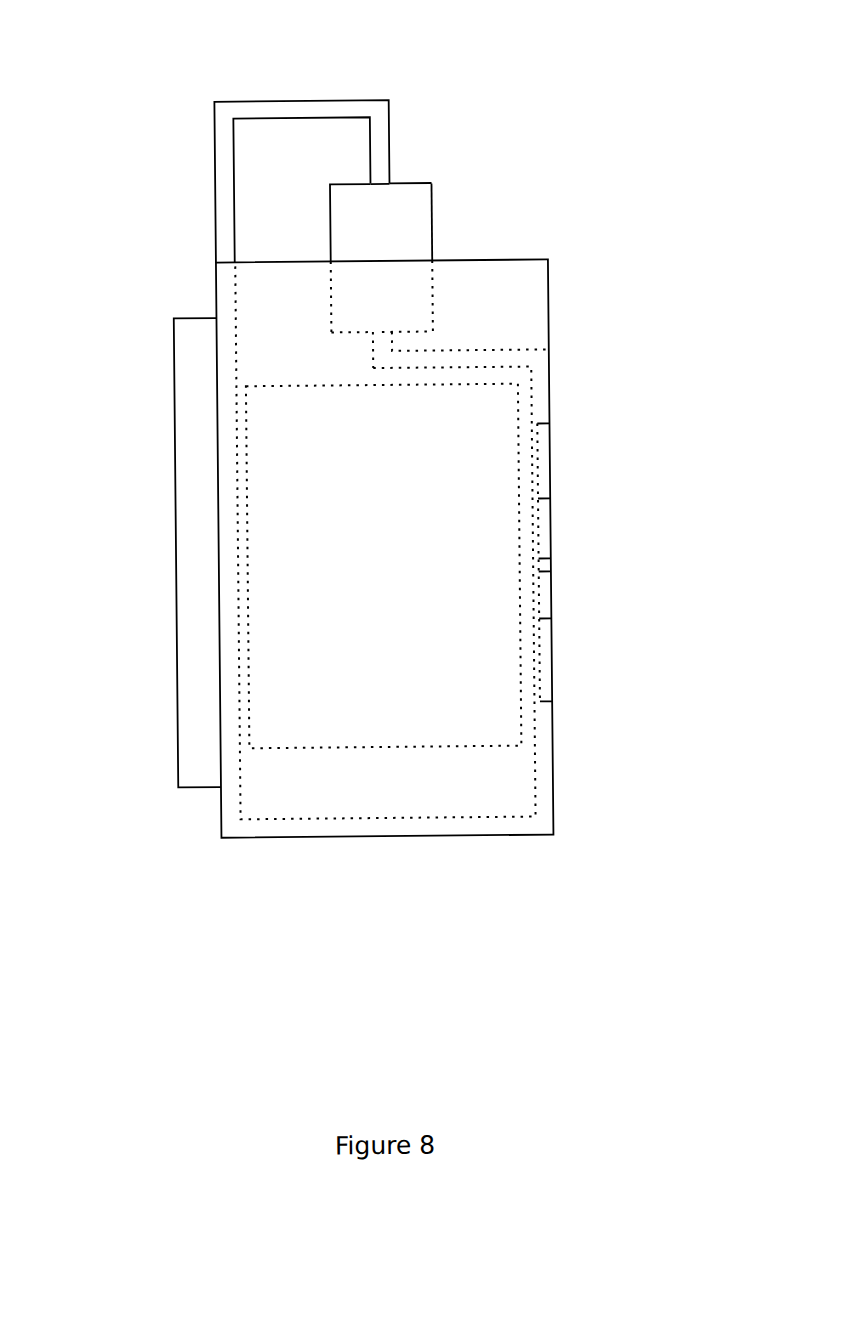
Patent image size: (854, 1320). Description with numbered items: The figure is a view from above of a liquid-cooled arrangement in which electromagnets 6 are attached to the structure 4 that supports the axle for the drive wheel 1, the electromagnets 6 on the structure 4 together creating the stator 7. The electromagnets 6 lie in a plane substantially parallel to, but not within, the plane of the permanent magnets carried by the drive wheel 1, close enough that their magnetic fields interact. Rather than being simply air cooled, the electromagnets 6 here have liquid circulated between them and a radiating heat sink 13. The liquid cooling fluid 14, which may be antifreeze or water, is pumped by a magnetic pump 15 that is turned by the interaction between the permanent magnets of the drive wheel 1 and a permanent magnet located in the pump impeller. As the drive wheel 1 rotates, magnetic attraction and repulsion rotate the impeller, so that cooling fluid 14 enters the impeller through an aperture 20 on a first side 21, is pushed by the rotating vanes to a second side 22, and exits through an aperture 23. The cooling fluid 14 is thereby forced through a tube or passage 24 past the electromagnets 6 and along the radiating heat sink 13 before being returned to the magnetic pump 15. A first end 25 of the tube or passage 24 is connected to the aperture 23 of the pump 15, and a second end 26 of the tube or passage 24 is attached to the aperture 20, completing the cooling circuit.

The drive wheel 1 is at (295, 504).
The structure 4 is at (254, 838).
The electromagnets 6 is at (608, 561).
The stator 7 is at (628, 640).
The radiating heat sink 13 is at (198, 576).
The liquid cooling fluid 14 is at (227, 146).
The magnetic pump 15 is at (410, 210).
The aperture 20 is at (386, 183).
The first side 21 is at (416, 182).
The second side 22 is at (354, 332).
The aperture 23 is at (385, 333).
The tube or passage 24 is at (218, 188).
The first end 25 is at (381, 344).
The second end 26 is at (381, 172).